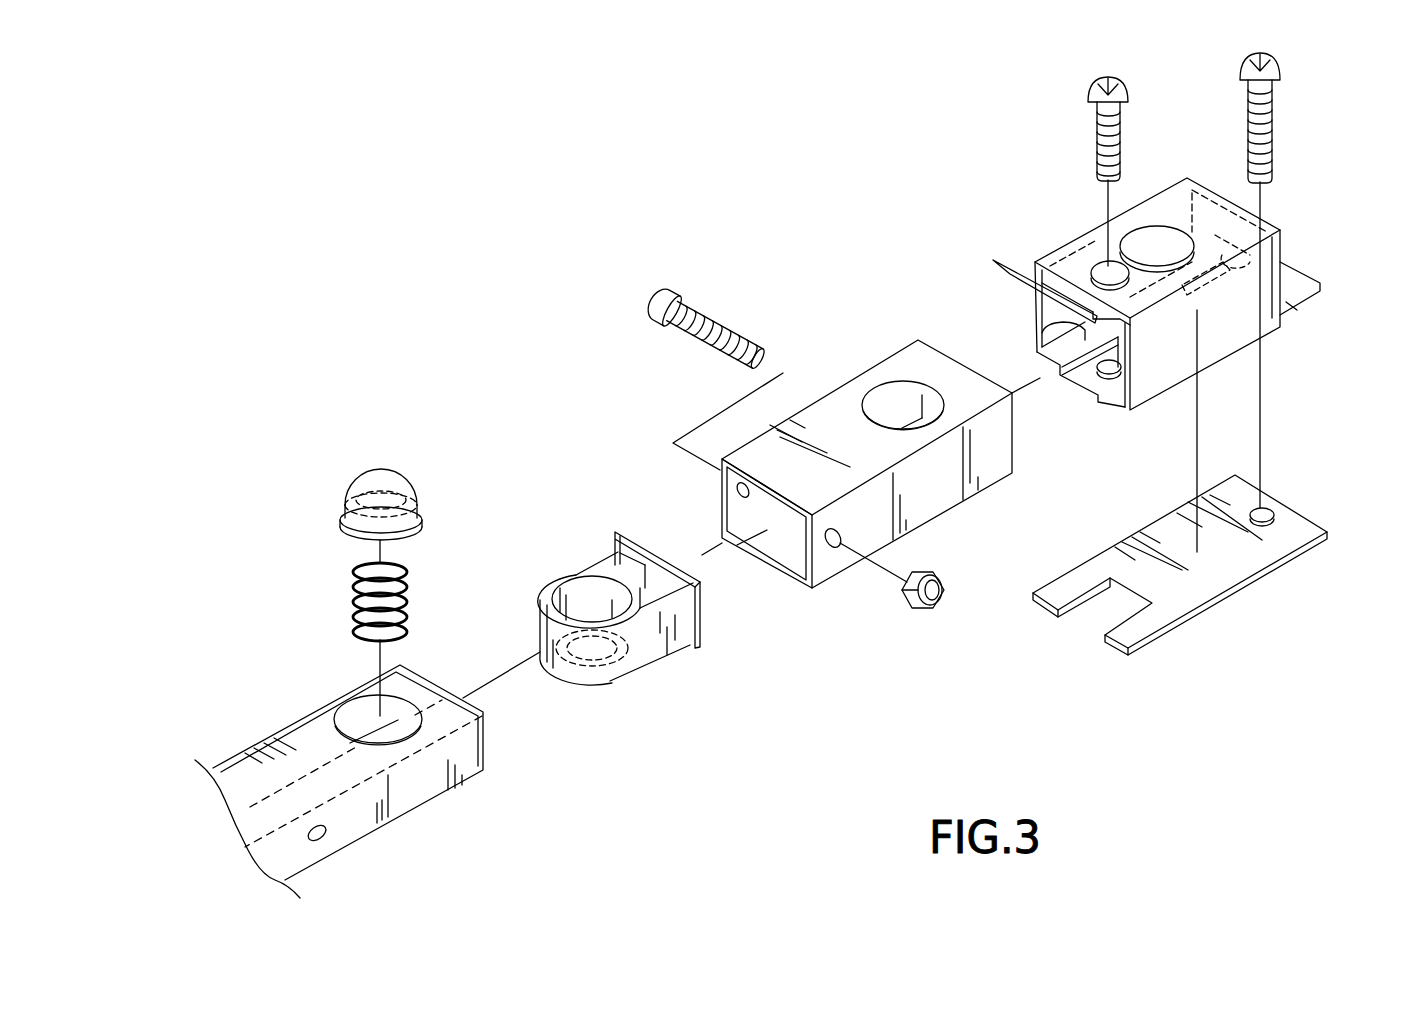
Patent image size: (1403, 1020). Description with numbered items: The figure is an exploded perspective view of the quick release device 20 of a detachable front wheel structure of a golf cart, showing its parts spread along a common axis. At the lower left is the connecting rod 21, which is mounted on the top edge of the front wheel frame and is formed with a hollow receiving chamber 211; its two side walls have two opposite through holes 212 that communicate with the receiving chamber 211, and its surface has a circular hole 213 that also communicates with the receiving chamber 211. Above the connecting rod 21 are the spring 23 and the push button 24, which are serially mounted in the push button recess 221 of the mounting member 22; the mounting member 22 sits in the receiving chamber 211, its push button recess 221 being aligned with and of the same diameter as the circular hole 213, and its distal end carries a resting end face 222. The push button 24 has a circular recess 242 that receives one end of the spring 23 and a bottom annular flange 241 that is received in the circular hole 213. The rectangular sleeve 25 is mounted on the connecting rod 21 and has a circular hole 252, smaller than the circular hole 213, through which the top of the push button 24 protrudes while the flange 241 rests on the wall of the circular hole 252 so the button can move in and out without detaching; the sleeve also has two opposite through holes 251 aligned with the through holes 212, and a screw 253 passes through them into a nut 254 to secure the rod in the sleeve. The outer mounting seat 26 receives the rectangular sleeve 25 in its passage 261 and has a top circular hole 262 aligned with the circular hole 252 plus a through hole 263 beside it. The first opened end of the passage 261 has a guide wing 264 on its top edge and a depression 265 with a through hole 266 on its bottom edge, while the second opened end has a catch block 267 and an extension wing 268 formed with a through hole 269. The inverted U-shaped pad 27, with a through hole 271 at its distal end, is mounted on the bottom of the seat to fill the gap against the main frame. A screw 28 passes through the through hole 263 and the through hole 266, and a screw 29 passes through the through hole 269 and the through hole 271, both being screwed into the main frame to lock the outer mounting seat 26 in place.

The quick release device 20 is at (511, 285).
The connecting rod 21 is at (420, 787).
The receiving chamber 211 is at (428, 685).
The through holes 212 is at (325, 840).
The circular hole 213 is at (372, 712).
The mounting member 22 is at (607, 677).
The push button recess 221 is at (595, 590).
The resting end face 222 is at (703, 622).
The spring 23 is at (355, 583).
The push button 24 is at (357, 477).
The annular flange 241 is at (417, 518).
The circular recess 242 is at (380, 483).
The rectangular sleeve 25 is at (945, 500).
The through holes 251 is at (848, 547).
The circular hole 252 is at (890, 395).
The screw 253 is at (719, 322).
The nut 254 is at (940, 600).
The outer mounting seat 26 is at (1093, 237).
The passage 261 is at (1033, 343).
The circular hole 262 is at (1158, 243).
The through hole 263 is at (1080, 250).
The guide wing 264 is at (1010, 273).
The depression 265 is at (1068, 380).
The through hole 266 is at (1140, 402).
The catch block 267 is at (1240, 272).
The extension wing 268 is at (1298, 275).
The through hole 269 is at (1297, 312).
The inverted U-shaped pad 27 is at (1207, 592).
The through hole 271 is at (1268, 520).
The screw 28 is at (1092, 82).
The screw 29 is at (1275, 110).